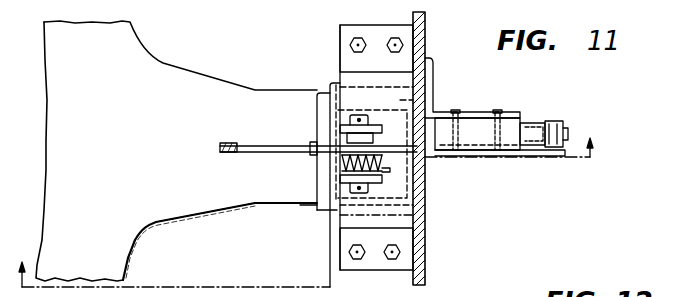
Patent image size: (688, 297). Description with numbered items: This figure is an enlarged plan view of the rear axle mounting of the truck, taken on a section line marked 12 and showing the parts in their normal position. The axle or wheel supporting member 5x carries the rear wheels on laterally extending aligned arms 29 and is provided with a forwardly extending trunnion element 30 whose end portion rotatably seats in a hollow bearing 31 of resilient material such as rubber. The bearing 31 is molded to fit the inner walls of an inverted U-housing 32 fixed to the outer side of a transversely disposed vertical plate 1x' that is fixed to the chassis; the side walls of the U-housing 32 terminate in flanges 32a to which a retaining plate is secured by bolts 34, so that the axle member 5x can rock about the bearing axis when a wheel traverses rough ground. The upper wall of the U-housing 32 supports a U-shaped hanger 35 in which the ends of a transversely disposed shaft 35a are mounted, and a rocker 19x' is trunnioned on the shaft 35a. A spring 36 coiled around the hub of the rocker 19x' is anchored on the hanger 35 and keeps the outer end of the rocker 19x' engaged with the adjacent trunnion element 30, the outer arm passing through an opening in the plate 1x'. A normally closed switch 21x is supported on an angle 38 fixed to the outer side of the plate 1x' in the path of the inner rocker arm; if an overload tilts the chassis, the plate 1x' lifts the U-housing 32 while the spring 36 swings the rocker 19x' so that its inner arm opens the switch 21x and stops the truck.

The arm 29 is at (122, 44).
The axle or wheel supporting member 5x is at (245, 253).
The trunnion element 30 is at (293, 200).
The U-housing 32 is at (405, 205).
The flange 32a is at (377, 290).
The bolt 34 is at (403, 43).
The vertical plate 1x' is at (439, 154).
The hollow bearing 31 is at (433, 96).
The angle 38 is at (483, 112).
The switch 21x is at (488, 135).
The rocker 19x' is at (308, 129).
The shaft 35a is at (352, 118).
The spring 36 is at (345, 165).
The U-shaped hanger 35 is at (382, 178).
The section line 12- 12 is at (321, 207).